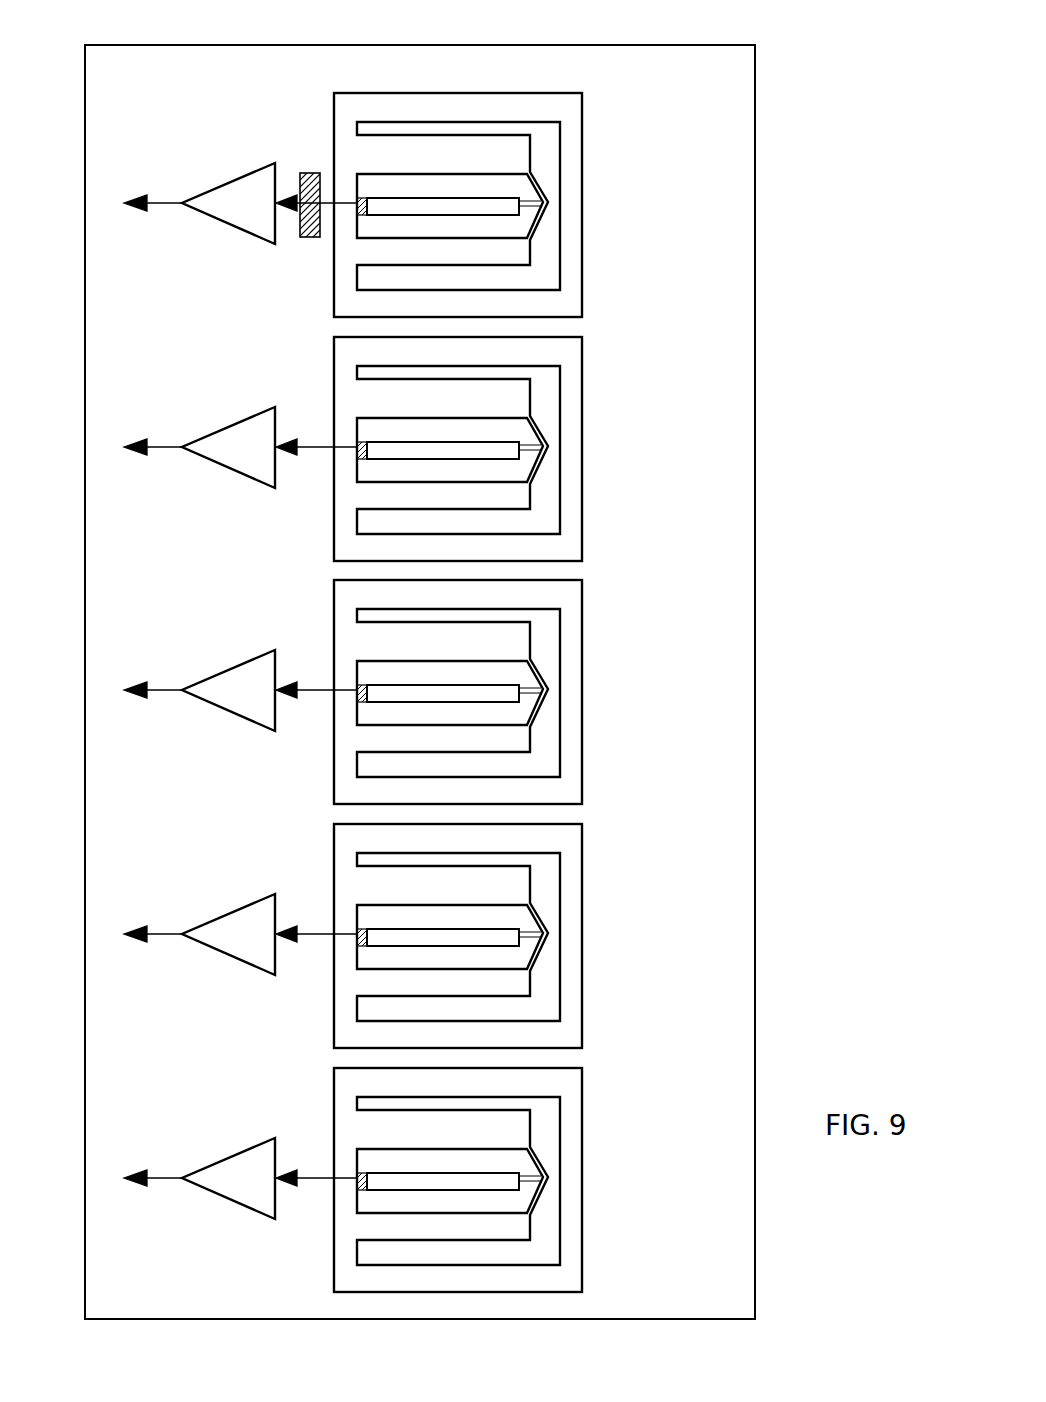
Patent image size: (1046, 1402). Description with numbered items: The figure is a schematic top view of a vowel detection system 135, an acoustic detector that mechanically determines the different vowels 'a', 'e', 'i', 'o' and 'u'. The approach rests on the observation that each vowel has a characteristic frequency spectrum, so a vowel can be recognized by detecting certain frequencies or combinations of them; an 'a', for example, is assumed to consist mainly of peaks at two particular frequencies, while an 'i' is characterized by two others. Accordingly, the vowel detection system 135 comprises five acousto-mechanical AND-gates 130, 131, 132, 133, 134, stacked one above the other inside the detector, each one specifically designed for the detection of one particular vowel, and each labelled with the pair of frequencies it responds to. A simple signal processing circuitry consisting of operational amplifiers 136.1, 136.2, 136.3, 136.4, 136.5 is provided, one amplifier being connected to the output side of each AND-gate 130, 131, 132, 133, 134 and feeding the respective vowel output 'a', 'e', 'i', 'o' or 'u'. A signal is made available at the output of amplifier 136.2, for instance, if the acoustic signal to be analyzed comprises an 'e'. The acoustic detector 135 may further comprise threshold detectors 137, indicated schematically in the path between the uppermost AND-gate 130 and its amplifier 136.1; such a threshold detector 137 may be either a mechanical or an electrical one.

The acousto-mechanical AND-gate 130 is at (570, 107).
The acousto-mechanical AND-gate 131 is at (570, 351).
The acousto-mechanical AND-gate 132 is at (570, 594).
The acousto-mechanical AND-gate 133 is at (570, 838).
The acousto-mechanical AND-gate 134 is at (570, 1082).
The vowel detection system 135 is at (728, 282).
The operational amplifier 136.1 is at (215, 193).
The operational amplifier 136.2 is at (215, 437).
The operational amplifier 136.3 is at (215, 680).
The operational amplifier 136.4 is at (215, 924).
The operational amplifier 136.5 is at (215, 1168).
The threshold detector 137 is at (302, 173).